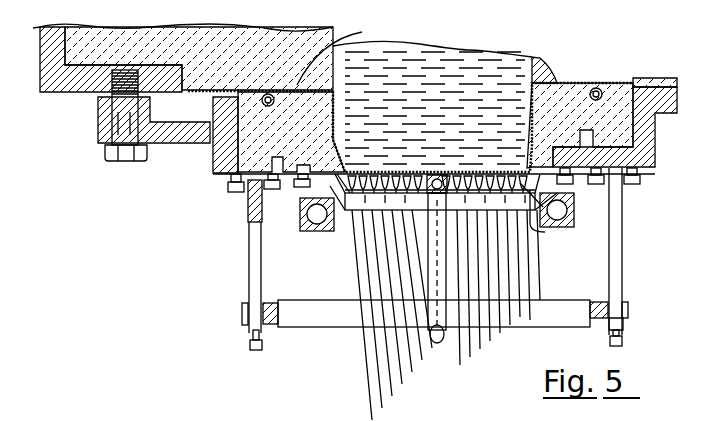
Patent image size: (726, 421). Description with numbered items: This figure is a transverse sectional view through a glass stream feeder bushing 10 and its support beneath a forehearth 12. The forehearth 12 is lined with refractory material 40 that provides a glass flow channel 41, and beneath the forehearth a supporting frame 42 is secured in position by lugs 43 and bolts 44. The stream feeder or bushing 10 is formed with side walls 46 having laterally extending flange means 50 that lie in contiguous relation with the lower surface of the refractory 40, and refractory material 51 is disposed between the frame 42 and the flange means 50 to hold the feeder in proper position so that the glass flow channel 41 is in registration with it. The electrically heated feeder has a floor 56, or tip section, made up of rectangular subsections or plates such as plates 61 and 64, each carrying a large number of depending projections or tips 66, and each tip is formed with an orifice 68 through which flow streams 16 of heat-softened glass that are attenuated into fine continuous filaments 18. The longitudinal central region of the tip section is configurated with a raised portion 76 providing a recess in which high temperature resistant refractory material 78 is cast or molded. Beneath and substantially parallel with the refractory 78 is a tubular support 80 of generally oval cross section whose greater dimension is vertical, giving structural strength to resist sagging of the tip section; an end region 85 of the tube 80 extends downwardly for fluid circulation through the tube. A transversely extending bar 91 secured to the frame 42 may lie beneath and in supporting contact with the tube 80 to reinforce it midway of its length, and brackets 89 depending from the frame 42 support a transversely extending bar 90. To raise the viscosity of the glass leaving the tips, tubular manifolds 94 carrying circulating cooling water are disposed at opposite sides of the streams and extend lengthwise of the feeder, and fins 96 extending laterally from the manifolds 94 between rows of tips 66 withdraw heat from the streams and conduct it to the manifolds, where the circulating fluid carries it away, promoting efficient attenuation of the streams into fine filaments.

The stream feeder bushing 10 is at (340, 183).
The forehearth 12 is at (78, 110).
The streams 16 is at (510, 200).
The continuous filaments 18 is at (400, 345).
The refractory material 40 is at (320, 42).
The glass flow channel 41 is at (502, 72).
The supporting frame 42 is at (217, 167).
The lugs 43 is at (102, 132).
The bolts 44 is at (123, 160).
The side walls 46 is at (335, 112).
The flange means 50 is at (333, 42).
The refractory material 51 is at (233, 133).
The floor 56 is at (350, 175).
The subsection plate 61 is at (441, 168).
The subsection plate 64 is at (347, 197).
The tips 66 is at (408, 187).
The orifice 68 is at (393, 178).
The raised portion 76 is at (435, 172).
The refractory material 78 is at (420, 175).
The tubular support 80 is at (458, 192).
The end region 85 is at (433, 268).
The brackets 89 is at (247, 228).
The bar 90 is at (313, 300).
The transversely extending bar 91 is at (337, 200).
The manifolds 94 is at (302, 217).
The fins 96 is at (533, 212).